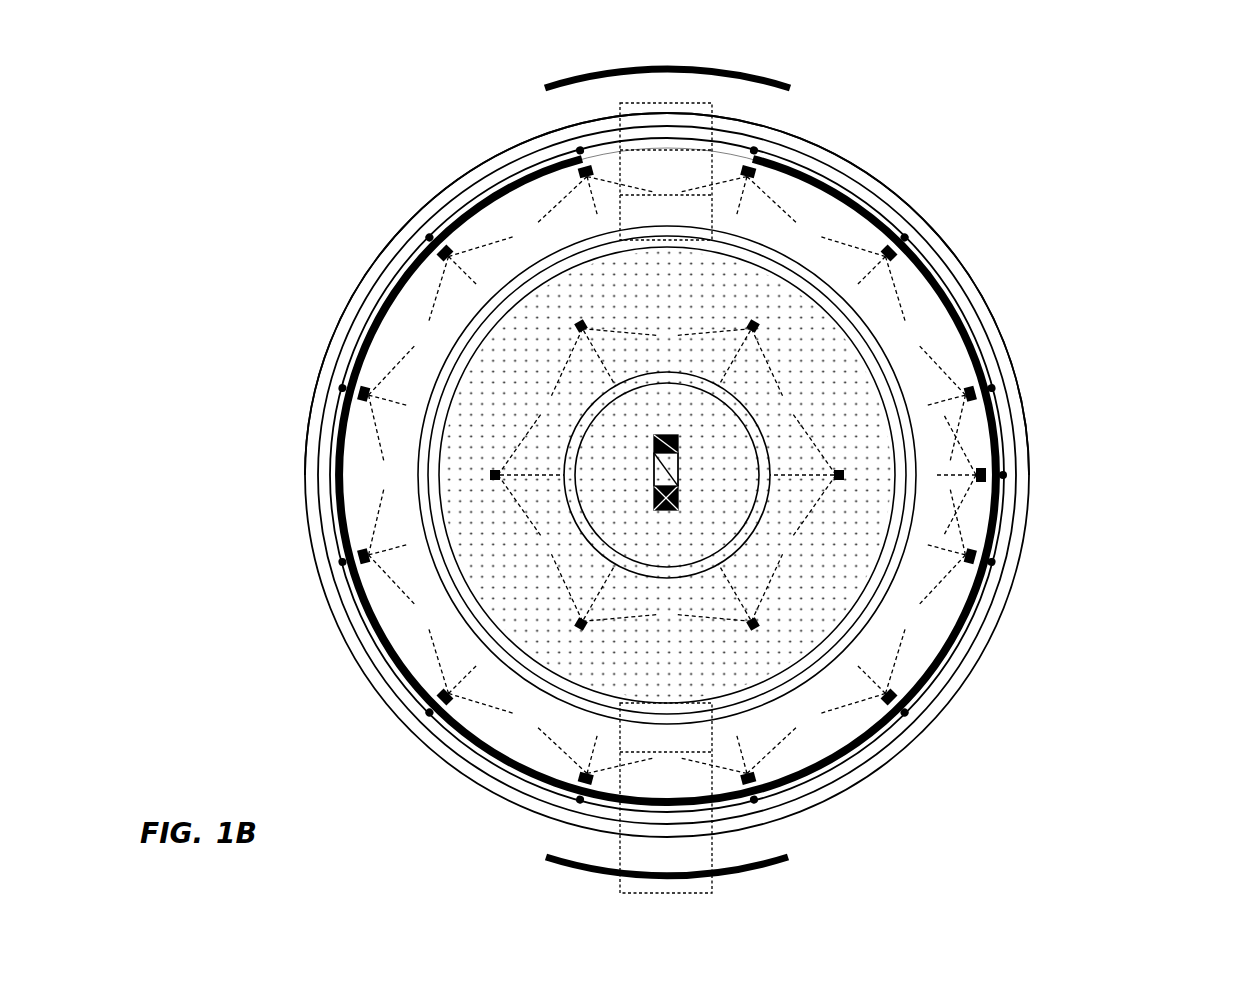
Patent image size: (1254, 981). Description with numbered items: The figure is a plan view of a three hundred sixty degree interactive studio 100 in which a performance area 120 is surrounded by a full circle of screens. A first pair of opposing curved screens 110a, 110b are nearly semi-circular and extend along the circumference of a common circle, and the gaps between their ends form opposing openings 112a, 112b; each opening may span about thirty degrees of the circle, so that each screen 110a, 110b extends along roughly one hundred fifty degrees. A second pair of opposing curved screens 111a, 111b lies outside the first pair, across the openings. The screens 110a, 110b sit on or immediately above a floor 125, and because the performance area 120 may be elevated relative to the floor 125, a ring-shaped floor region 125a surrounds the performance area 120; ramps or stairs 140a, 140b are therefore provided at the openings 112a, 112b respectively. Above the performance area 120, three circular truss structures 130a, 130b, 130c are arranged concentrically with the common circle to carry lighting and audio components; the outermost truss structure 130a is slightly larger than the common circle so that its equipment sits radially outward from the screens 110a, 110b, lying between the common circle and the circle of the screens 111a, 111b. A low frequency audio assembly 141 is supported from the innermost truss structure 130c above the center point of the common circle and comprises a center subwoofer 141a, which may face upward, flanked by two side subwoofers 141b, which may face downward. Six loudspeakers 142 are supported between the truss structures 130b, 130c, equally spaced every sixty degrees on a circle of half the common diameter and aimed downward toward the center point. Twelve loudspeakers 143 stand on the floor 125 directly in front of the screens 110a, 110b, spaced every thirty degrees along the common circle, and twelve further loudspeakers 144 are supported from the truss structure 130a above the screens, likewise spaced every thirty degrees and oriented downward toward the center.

The 360 degree interactive studio 100 is at (245, 127).
The first curved screen 110a is at (405, 262).
The second curved screen 110b is at (956, 290).
The third curved screen 111a is at (592, 65).
The fourth curved screen 111b is at (758, 875).
The first opening 112a is at (547, 117).
The second opening 112b is at (538, 836).
The performance area 120 is at (836, 582).
The floor 125 is at (412, 650).
The ring-shaped floor region 125a is at (508, 690).
The circular truss structure 130a is at (947, 720).
The circular truss structure 130b is at (919, 490).
The circular truss structure 130c is at (775, 455).
The ramp or stairs 140a is at (698, 140).
The ramp or stairs 140b is at (627, 853).
The low frequency audio assembly 141 is at (566, 512).
The center subwoofer 141a is at (686, 480).
The side subwoofer 141b is at (683, 442).
The loudspeaker 142 is at (484, 463).
The loudspeaker 143 is at (338, 465).
The loudspeaker 144 is at (346, 390).